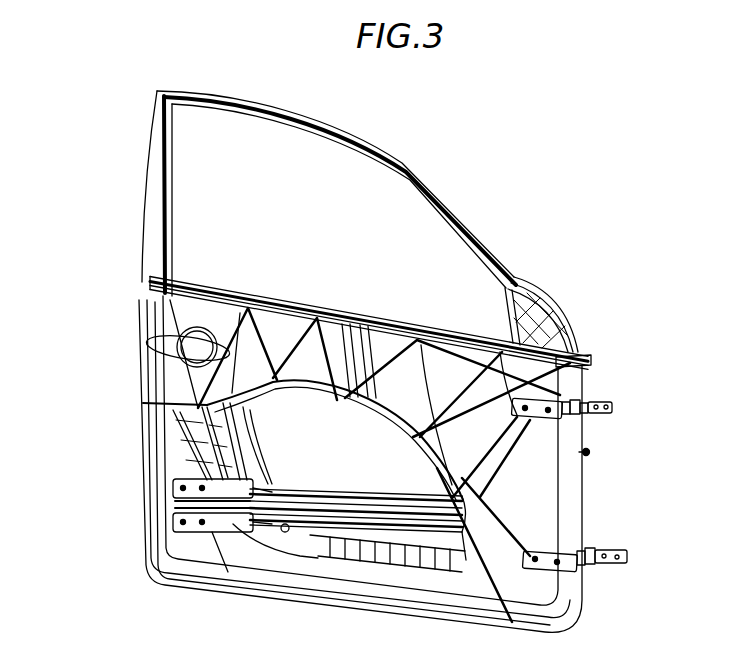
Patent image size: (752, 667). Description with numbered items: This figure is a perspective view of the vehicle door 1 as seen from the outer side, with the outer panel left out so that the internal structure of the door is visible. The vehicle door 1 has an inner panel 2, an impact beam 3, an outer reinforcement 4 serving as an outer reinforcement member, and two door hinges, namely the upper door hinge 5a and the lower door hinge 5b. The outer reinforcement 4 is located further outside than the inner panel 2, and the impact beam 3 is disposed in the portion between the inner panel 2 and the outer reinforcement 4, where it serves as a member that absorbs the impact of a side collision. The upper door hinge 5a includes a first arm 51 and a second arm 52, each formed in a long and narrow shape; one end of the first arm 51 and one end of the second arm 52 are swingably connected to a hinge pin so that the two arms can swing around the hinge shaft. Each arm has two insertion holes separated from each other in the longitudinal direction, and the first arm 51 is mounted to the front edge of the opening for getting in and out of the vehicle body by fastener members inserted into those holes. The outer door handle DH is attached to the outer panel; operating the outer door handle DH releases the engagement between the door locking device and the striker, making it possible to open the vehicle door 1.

The vehicle door 1 is at (500, 144).
The inner panel 2 is at (260, 442).
The impact beam 3 is at (355, 493).
The outer reinforcement 4 is at (292, 318).
The upper door hinge 5a is at (609, 380).
The lower door hinge 5b is at (609, 534).
The first arm 51 is at (613, 406).
The second arm 52 is at (562, 434).
The outer door handle DH is at (148, 352).